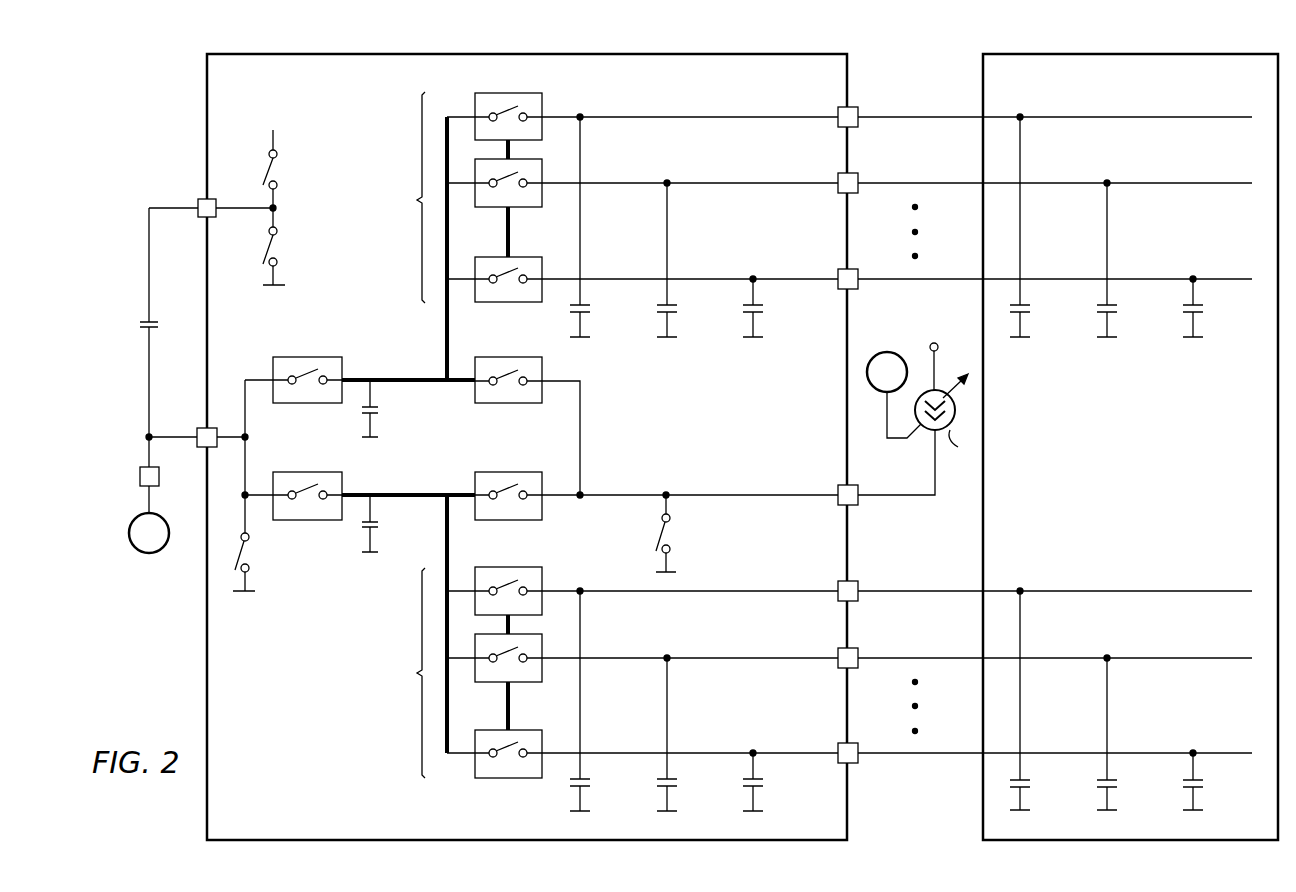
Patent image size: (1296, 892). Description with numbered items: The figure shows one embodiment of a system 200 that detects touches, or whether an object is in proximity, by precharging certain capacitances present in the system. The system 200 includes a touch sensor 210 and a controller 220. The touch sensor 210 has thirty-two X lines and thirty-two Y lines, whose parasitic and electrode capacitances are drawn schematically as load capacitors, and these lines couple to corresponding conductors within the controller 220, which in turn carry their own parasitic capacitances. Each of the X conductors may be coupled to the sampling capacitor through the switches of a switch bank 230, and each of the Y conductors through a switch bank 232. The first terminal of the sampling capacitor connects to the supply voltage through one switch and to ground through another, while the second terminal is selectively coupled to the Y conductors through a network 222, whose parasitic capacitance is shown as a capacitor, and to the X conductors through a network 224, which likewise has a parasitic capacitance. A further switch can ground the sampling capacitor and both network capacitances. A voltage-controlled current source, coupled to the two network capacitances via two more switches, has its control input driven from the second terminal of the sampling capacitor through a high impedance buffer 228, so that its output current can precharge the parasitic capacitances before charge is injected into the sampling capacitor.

The system 200 is at (142, 122).
The touch sensor 210 is at (1148, 92).
The controller 220 is at (377, 92).
The network 222 is at (416, 378).
The network 224 is at (416, 493).
The buffer 228 is at (140, 474).
The switch bank 230 is at (459, 636).
The switch bank 232 is at (459, 236).